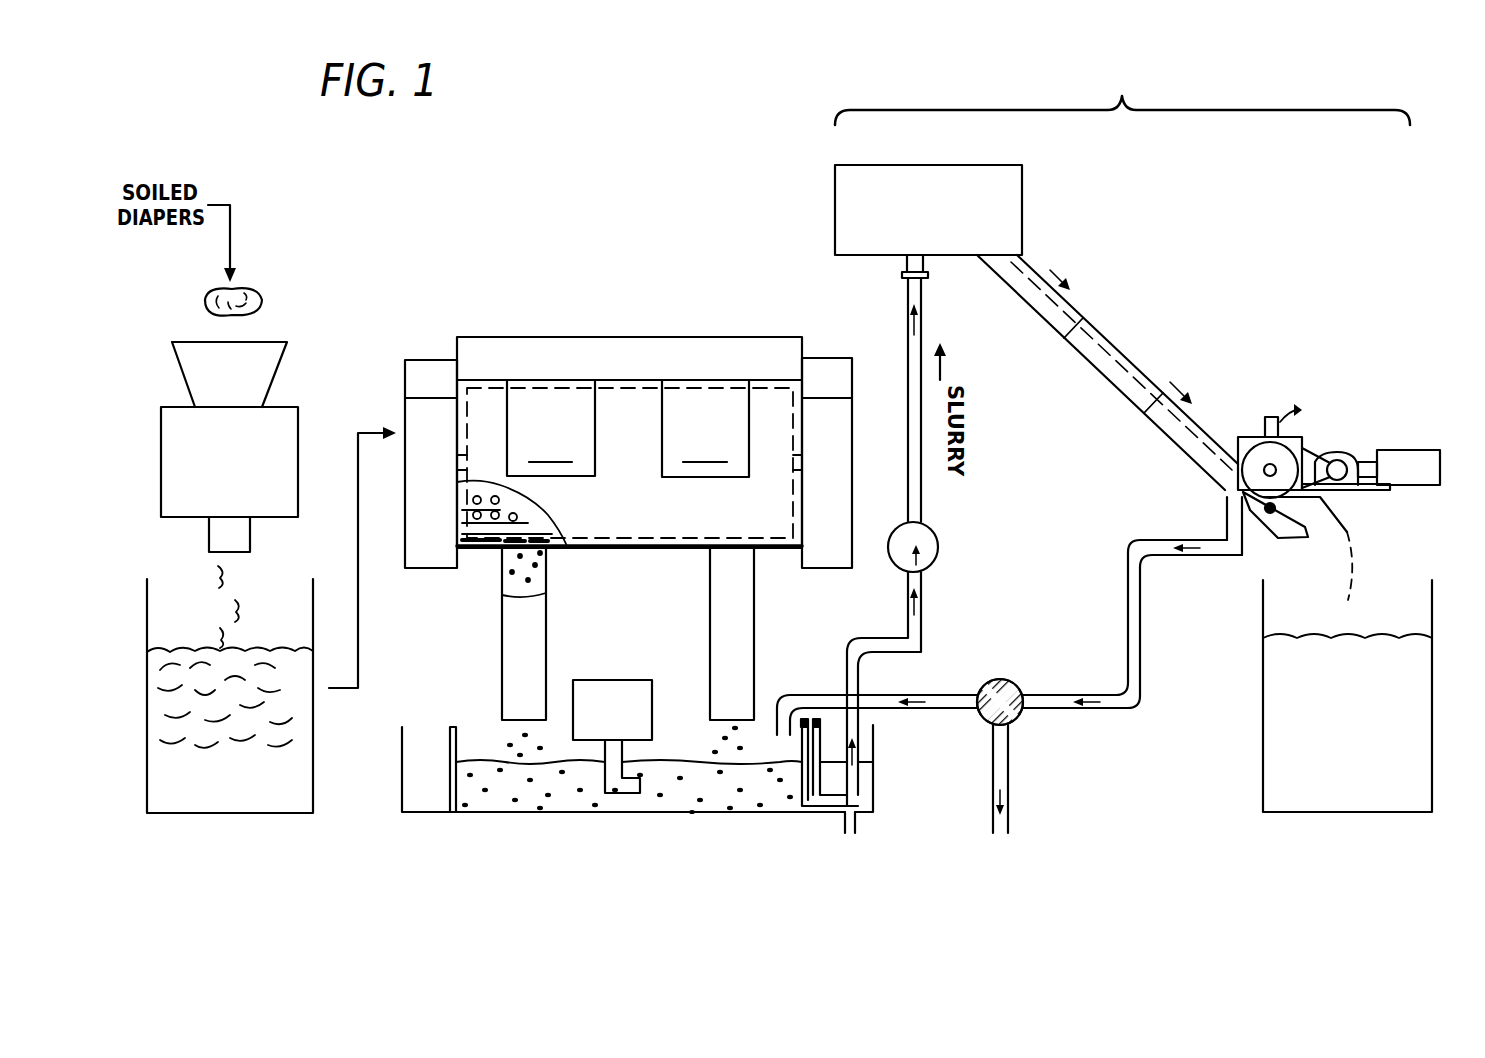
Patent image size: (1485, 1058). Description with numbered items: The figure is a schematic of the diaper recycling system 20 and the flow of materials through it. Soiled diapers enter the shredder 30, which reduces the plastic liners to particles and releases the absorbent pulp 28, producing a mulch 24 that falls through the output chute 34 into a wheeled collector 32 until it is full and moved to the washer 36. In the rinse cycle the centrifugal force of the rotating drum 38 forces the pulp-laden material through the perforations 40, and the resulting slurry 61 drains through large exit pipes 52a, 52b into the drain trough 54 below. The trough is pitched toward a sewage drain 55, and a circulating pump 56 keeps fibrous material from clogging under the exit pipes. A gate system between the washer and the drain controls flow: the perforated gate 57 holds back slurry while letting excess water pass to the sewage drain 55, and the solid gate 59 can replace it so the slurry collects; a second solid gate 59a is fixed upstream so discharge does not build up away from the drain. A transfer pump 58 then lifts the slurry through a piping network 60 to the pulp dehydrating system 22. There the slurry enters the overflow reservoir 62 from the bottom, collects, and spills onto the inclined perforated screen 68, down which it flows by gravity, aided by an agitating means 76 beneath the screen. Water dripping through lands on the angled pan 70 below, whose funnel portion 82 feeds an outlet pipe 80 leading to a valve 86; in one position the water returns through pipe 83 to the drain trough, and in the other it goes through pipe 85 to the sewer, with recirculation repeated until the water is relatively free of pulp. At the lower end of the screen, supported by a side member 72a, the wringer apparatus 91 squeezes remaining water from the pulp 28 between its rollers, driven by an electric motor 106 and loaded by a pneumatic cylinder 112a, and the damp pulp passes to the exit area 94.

The diaper recycling system 20 is at (652, 176).
The pulp dehydrating system 22 is at (1122, 92).
The diaper mulch 24 is at (278, 645).
The absorbent pulp 28 is at (1393, 640).
The shredder 30 is at (288, 408).
The wheeled collector 32 is at (185, 815).
The output chute 34 is at (250, 530).
The washer 36 is at (485, 345).
The rotating drum 38 is at (500, 562).
The perforations 40 is at (490, 550).
The exit pipe 52a is at (500, 645).
The exit pipe 52b is at (708, 560).
The drain trough 54 is at (400, 780).
The sewage drain 55 is at (858, 818).
The circulating pump 56 is at (625, 680).
The perforated gate 57 is at (803, 772).
The transfer pump 58 is at (938, 541).
The solid gate 59 is at (815, 785).
The second solid gate 59a is at (445, 798).
The piping network 60 is at (918, 638).
The slurry 61 is at (505, 795).
The overflow reservoir 62 is at (1010, 165).
The inclined perforated screen 68 is at (1075, 306).
The angled pan 70 is at (1012, 290).
The side member 72a is at (1150, 416).
The agitating means 76 is at (1100, 365).
The outlet pipe 80 is at (1240, 545).
The funnel portion 82 is at (1222, 498).
The return pipe 83 is at (940, 710).
The sewer pipe 85 is at (1010, 765).
The valve 86 is at (1005, 675).
The wringer apparatus 91 is at (1327, 447).
The exit area 94 is at (1352, 500).
The electric motor 106 is at (1403, 450).
The pneumatic cylinder 112a is at (1262, 440).